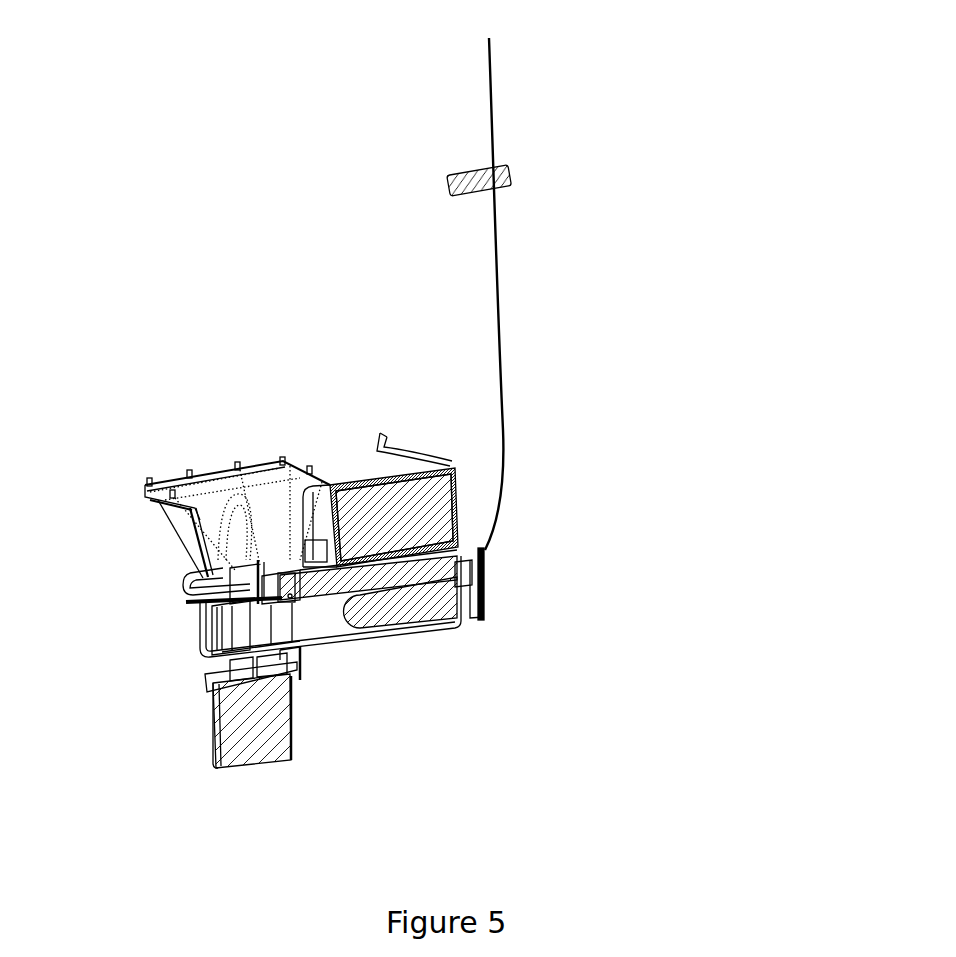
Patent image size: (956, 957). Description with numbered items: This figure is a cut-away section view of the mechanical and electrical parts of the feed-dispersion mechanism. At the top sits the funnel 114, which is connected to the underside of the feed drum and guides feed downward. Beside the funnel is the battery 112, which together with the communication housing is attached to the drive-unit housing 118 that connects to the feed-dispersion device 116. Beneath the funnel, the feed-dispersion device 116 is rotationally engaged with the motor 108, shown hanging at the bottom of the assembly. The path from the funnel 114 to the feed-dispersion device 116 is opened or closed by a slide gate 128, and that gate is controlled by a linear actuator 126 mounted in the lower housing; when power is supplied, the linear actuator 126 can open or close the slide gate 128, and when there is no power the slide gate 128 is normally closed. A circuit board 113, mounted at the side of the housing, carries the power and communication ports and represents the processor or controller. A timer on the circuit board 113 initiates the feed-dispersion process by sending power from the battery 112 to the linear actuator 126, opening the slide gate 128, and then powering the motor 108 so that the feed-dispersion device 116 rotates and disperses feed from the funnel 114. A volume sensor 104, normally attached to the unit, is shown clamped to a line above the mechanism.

The volume sensor 104 is at (450, 187).
The motor 108 is at (250, 727).
The battery 112 is at (370, 512).
The circuit board 113 is at (424, 548).
The funnel 114 is at (258, 493).
The feed-dispersion device 116 is at (245, 637).
The drive-unit housing 118 is at (327, 628).
The linear actuator 126 is at (400, 608).
The slide gate 128 is at (250, 600).